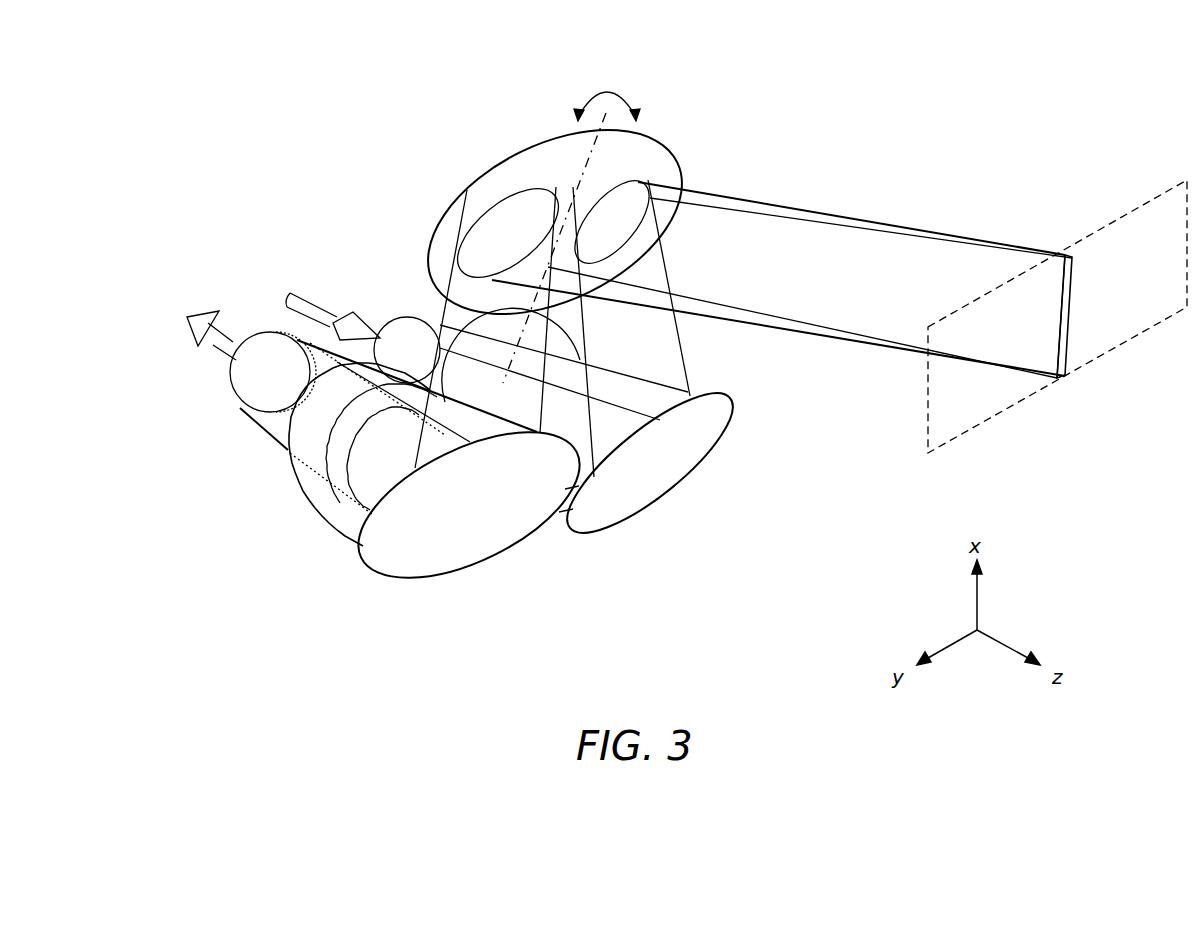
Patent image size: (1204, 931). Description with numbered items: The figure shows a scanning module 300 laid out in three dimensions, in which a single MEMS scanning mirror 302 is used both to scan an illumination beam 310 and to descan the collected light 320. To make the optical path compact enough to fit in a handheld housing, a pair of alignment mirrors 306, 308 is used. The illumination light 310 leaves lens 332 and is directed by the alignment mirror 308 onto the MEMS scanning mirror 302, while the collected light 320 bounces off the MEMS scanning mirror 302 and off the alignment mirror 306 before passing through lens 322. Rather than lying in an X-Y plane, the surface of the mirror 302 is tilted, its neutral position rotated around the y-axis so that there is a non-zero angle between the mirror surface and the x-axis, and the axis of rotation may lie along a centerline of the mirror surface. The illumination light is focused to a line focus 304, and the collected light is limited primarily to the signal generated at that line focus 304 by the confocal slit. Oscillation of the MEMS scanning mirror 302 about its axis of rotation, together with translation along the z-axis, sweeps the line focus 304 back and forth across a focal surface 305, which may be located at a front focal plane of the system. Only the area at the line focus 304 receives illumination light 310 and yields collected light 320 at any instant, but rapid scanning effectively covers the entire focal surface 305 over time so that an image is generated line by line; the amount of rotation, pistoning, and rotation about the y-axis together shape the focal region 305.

The scanning module 300 is at (240, 94).
The MEMS scanning mirror 302 is at (540, 166).
The line focus 304 is at (1064, 250).
The focal surface 305 is at (1147, 200).
The alignment mirror 306 is at (433, 560).
The alignment mirror 308 is at (650, 486).
The illumination beam 310 is at (397, 343).
The collected light 320 is at (255, 400).
The lens 322 is at (302, 464).
The lens 332 is at (512, 350).